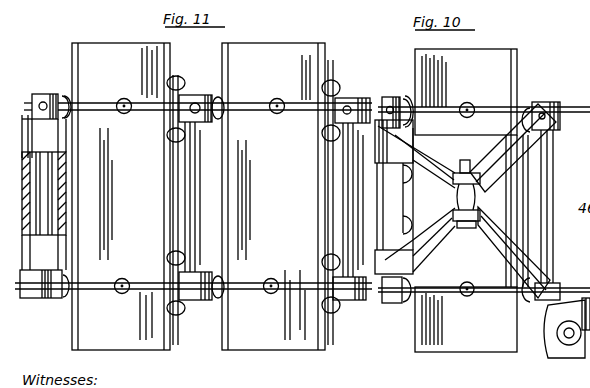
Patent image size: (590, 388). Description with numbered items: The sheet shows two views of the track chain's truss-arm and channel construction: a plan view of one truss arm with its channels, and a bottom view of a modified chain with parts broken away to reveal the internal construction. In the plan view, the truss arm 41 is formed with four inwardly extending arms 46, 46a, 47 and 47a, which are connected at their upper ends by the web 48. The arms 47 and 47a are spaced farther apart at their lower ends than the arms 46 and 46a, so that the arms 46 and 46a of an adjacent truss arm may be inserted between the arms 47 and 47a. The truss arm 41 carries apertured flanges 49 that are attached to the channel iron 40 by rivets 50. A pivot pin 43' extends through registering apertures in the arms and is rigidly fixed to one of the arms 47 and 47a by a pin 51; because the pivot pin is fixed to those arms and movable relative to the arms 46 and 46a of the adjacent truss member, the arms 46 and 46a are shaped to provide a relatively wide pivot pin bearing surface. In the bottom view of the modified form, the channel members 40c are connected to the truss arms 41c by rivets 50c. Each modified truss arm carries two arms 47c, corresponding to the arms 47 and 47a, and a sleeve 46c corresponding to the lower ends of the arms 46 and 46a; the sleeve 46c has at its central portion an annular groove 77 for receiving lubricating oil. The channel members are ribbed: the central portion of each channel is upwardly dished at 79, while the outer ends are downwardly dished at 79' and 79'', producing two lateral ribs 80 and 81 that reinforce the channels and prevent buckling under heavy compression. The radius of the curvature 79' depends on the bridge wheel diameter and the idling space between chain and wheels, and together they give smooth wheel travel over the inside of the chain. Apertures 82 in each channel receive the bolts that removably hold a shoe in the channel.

In FIG. 10, the channel iron 40 is at (448, 340).
In FIG. 11, the channel member 40c is at (98, 50).
In FIG. 10, the truss arm 41 is at (464, 242).
In FIG. 11, the truss arm 41c is at (30, 270).
In FIG. 11, the pivot pin 43' is at (356, 218).
In FIG. 10, the pivot pin 43' is at (554, 205).
In FIG. 10, the arm 46 is at (418, 272).
In FIG. 10, the arm 46a is at (428, 158).
In FIG. 11, the sleeve 46c is at (18, 118).
In FIG. 10, the arm 47 is at (508, 270).
In FIG. 10, the arm 47a is at (532, 112).
In FIG. 11, the arm 47c is at (188, 95).
In FIG. 10, the web 48 is at (453, 195).
In FIG. 10, the apertured flange 49 is at (402, 105).
In FIG. 10, the rivet 50 is at (589, 378).
In FIG. 11, the rivet 50c is at (80, 290).
In FIG. 10, the pin 51 is at (560, 128).
In FIG. 11, the annular groove 77 is at (22, 220).
In FIG. 11, the upwardly dished central portion 79 is at (202, 212).
In FIG. 10, the upwardly dished central portion 79 is at (543, 211).
In FIG. 11, the downwardly dished outer end 79' is at (214, 198).
In FIG. 10, the downwardly dished outer end 79' is at (481, 211).
In FIG. 11, the plate 79'' is at (115, 332).
In FIG. 11, the lateral rib 80 is at (264, 111).
In FIG. 10, the lateral rib 80 is at (505, 110).
In FIG. 11, the lateral rib 81 is at (291, 283).
In FIG. 10, the lateral rib 81 is at (506, 293).
In FIG. 11, the aperture 82 is at (124, 114).
In FIG. 10, the aperture 82 is at (468, 103).